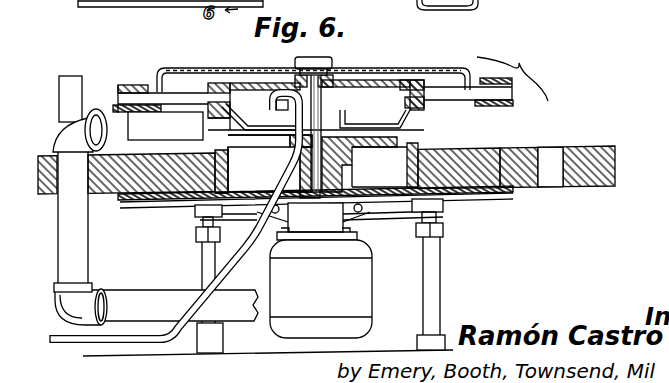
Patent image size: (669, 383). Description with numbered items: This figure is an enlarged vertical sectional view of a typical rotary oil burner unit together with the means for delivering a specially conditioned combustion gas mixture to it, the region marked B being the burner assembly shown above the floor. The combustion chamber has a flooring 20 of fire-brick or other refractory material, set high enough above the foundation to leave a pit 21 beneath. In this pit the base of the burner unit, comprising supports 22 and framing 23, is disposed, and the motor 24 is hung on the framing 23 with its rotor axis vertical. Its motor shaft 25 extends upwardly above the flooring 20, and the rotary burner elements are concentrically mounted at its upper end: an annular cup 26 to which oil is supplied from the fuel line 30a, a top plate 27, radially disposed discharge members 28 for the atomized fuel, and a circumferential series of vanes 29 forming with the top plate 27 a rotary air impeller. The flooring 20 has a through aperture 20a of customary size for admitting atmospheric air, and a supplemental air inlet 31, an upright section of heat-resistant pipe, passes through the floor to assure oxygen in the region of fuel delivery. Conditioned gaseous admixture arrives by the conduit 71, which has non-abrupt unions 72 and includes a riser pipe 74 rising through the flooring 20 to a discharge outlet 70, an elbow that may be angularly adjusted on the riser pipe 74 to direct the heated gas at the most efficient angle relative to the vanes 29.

The flooring 20 is at (590, 147).
The through aperture 20a is at (555, 180).
The pit 21 is at (496, 210).
The supports 22 is at (197, 256).
The framing 23 is at (398, 195).
The motor 24 is at (366, 286).
The motor shaft 25 is at (323, 99).
The annular cup 26 is at (395, 116).
The top plate 27 is at (218, 72).
The discharge members 28 is at (135, 97).
The vanes 29 is at (183, 112).
The fuel line 30a is at (282, 98).
The supplemental air inlet 31 is at (71, 78).
The discharge outlet 70 is at (97, 110).
The conduit 71 is at (150, 299).
The unions 72 is at (98, 292).
The riser pipe 74 is at (87, 219).
The sub-assembly B is at (512, 75).